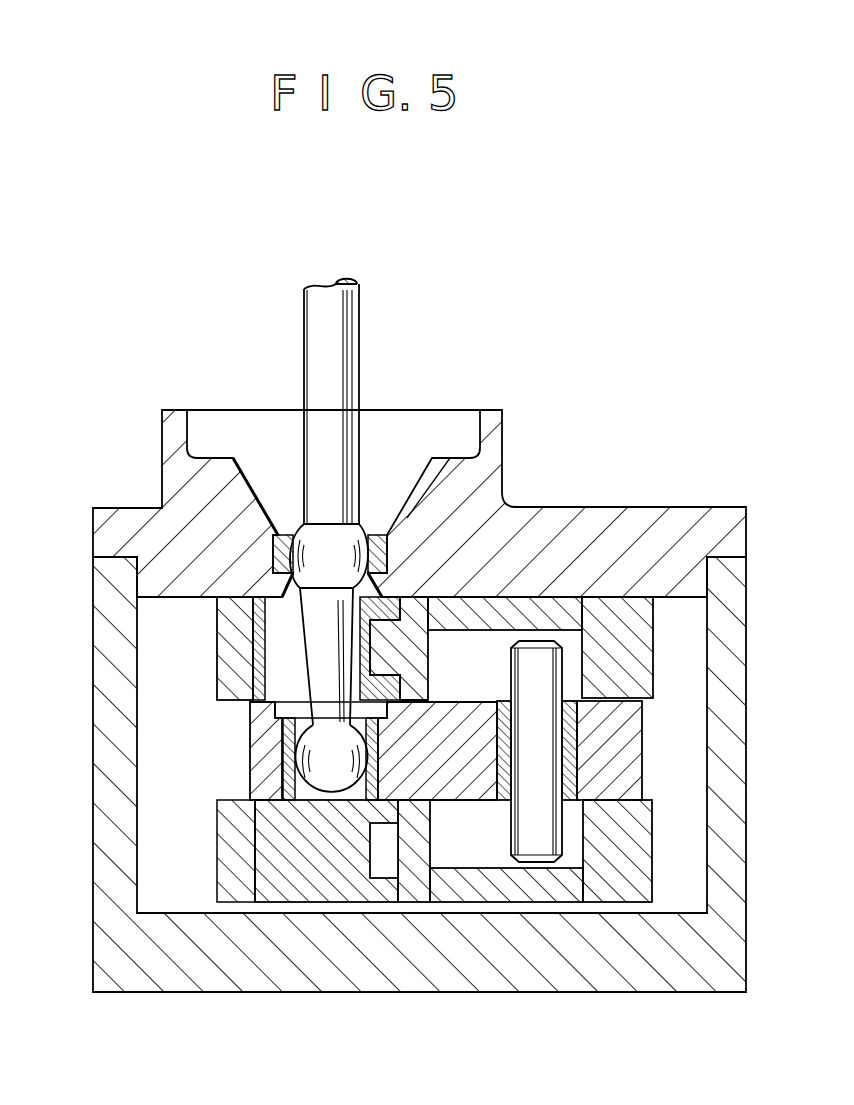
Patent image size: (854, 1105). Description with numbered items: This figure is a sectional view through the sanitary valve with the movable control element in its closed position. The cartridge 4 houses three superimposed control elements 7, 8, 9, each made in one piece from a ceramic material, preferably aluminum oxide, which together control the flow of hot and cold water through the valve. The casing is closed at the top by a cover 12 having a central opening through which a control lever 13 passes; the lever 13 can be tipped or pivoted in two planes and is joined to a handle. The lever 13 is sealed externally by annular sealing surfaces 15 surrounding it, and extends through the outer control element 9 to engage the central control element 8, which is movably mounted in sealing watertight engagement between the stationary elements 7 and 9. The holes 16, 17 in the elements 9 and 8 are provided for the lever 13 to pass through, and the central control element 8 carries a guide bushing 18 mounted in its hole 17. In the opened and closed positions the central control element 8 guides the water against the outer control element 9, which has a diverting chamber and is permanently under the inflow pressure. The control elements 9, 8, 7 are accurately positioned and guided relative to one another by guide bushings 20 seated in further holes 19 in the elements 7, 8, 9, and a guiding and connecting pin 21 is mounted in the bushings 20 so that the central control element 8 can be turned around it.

The cartridge 4 is at (105, 950).
The control element 7 is at (225, 858).
The central control element 8 is at (258, 722).
The outer control element 9 is at (230, 627).
The cover 12 is at (180, 490).
The control lever 13 is at (315, 320).
The annular sealing surfaces 15 is at (292, 532).
The hole 16 is at (250, 664).
The hole 17 is at (282, 767).
The guide bushing 18 is at (287, 733).
The further holes 19 is at (582, 673).
The guide bushing 20 is at (476, 617).
The guiding and connecting pin 21 is at (523, 823).